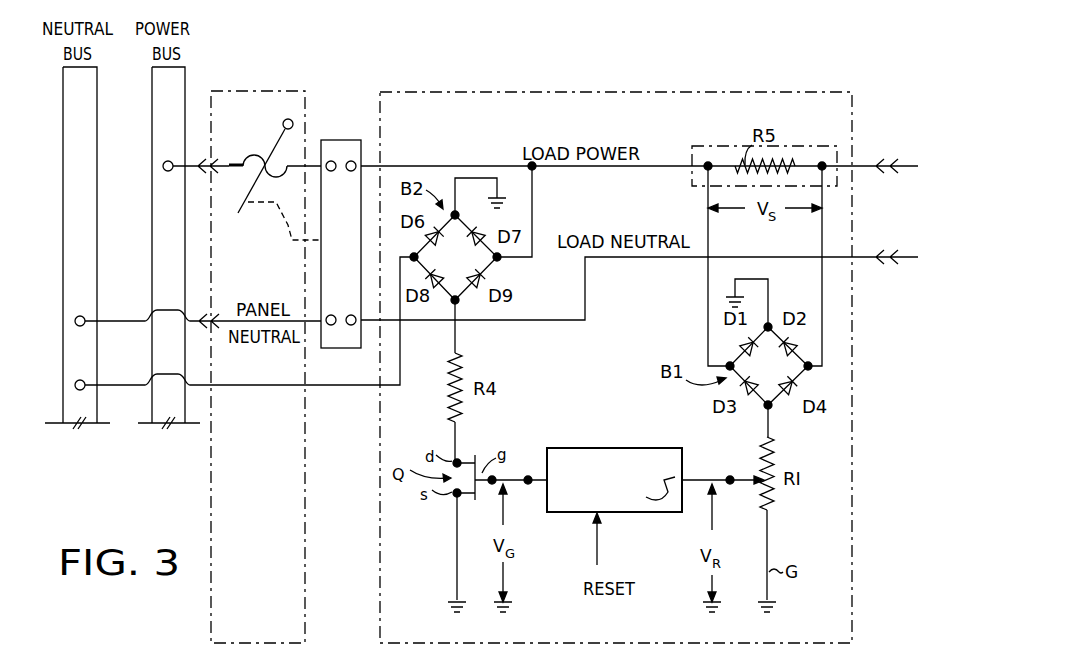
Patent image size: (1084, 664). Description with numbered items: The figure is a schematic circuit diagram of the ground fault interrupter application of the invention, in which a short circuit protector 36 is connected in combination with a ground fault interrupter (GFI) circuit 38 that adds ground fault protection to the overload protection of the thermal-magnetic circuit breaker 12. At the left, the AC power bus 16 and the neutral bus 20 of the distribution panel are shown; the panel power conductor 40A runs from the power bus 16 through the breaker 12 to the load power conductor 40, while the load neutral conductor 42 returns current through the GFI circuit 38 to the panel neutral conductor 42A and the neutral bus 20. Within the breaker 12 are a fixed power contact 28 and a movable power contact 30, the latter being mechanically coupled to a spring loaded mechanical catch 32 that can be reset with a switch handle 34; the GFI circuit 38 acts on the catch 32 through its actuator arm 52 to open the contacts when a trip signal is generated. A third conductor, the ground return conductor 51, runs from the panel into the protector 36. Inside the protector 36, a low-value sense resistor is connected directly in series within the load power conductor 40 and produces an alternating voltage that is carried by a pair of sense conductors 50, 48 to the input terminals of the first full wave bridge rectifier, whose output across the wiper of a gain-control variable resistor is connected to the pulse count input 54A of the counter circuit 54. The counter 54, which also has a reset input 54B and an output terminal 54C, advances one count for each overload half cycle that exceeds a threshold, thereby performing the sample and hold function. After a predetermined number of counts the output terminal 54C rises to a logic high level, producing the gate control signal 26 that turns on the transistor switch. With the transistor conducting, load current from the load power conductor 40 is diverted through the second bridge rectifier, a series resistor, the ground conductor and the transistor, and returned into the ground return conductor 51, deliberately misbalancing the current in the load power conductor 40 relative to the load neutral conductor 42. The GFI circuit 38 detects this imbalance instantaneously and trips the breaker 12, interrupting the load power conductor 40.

The thermal-magnetic circuit breaker 12 is at (258, 89).
The AC power bus 16 is at (185, 78).
The neutral bus 20 is at (88, 93).
The control signal 26 is at (519, 479).
The fixed power contact 28 is at (238, 170).
The movable power contact 30 is at (262, 143).
The spring loaded mechanical catch 32 is at (267, 166).
The switch handle 34 is at (286, 120).
The short circuit protector 36 is at (597, 89).
The ground fault interrupter (GFI) circuit 38 is at (344, 140).
The load power conductor 40 is at (432, 166).
The panel power conductor 40A is at (193, 166).
The load neutral conductor 42 is at (628, 258).
The panel neutral conductor 42A is at (112, 320).
The sense conductor 48 is at (822, 298).
The sense conductor 50 is at (708, 305).
The ground return conductor 51 is at (226, 385).
The actuator arm 52 is at (284, 227).
The counter circuit 54 is at (624, 448).
The pulse count input 54A is at (640, 493).
The reset input 54B is at (603, 545).
The output terminal 54C is at (531, 485).